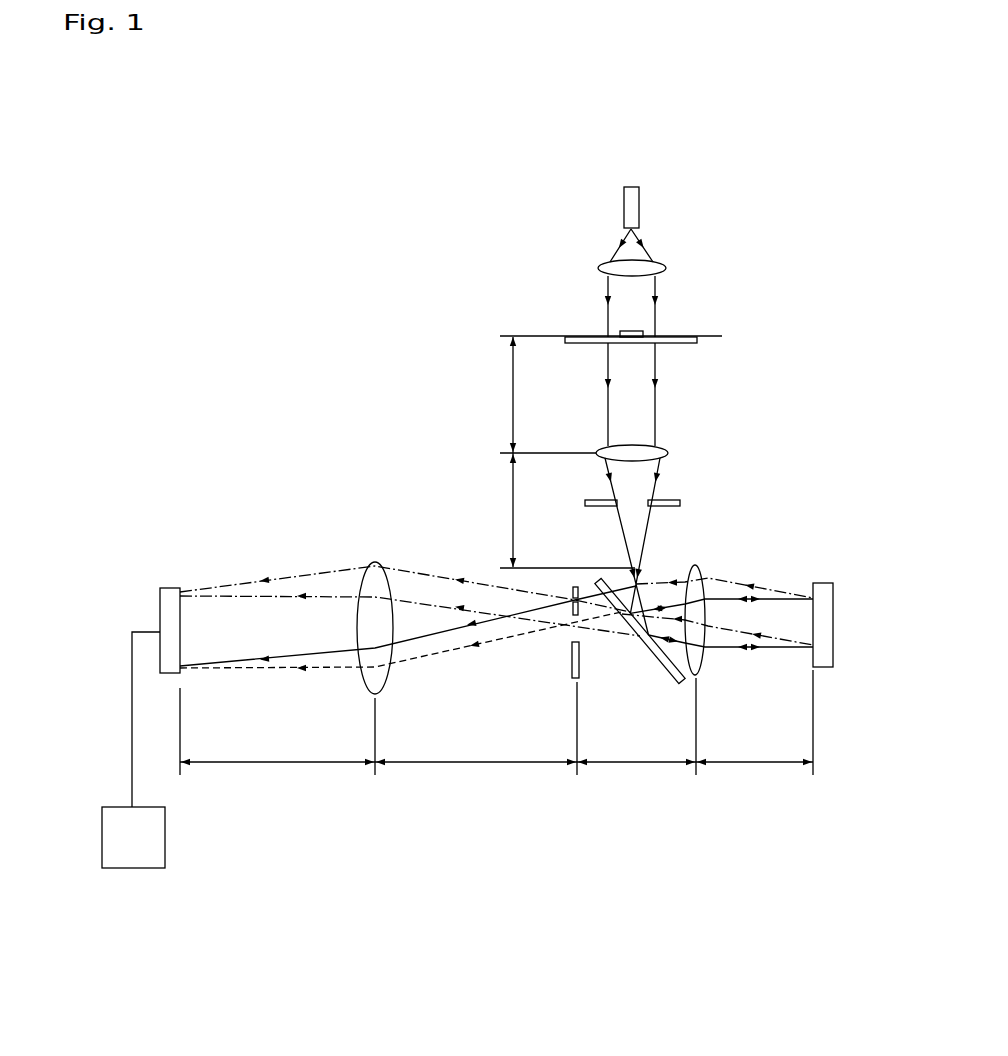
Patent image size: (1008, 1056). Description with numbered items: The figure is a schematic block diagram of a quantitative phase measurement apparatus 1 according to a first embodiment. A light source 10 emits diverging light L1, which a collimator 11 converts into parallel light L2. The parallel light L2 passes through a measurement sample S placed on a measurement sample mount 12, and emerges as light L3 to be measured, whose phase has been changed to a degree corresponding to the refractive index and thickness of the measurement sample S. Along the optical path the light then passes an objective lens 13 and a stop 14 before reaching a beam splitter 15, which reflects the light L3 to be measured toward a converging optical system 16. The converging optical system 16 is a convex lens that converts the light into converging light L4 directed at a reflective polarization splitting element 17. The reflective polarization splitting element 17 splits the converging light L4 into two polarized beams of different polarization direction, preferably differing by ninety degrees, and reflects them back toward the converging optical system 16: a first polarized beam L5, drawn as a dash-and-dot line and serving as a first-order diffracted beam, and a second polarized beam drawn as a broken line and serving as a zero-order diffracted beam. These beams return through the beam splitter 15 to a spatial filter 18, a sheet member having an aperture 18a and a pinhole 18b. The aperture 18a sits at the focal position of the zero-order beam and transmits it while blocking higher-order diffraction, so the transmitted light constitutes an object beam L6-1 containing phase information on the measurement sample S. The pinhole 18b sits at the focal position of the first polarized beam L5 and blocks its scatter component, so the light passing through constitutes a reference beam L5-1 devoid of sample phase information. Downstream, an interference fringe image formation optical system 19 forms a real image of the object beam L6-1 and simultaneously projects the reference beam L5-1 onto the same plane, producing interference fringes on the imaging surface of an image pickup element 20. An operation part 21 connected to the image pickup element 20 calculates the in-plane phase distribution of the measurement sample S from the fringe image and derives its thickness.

The quantitative phase measurement apparatus 1 is at (740, 171).
The light source 10 is at (640, 202).
The collimator 11 is at (667, 268).
The measurement sample mount 12 is at (722, 336).
The objective lens 13 is at (668, 453).
The stop 14 is at (680, 503).
The beam splitter 15 is at (658, 660).
The converging optical system 16 is at (697, 565).
The reflective polarization splitting element 17 is at (826, 583).
The spatial filter 18 is at (548, 637).
The aperture 18a is at (578, 645).
The pinhole 18b is at (568, 600).
The interference fringe image formation optical system 19 is at (375, 562).
The image pickup element 20 is at (172, 588).
The operation part 21 is at (165, 840).
The measurement sample S is at (635, 331).
The diverging light L1 is at (645, 235).
The parallel light L2 is at (657, 292).
The light to be measured L3 is at (657, 365).
The converging light L4 is at (762, 650).
The first polarized beam L5 is at (735, 583).
The reference beam L5-1 is at (415, 571).
The object beam L6-1 is at (423, 658).